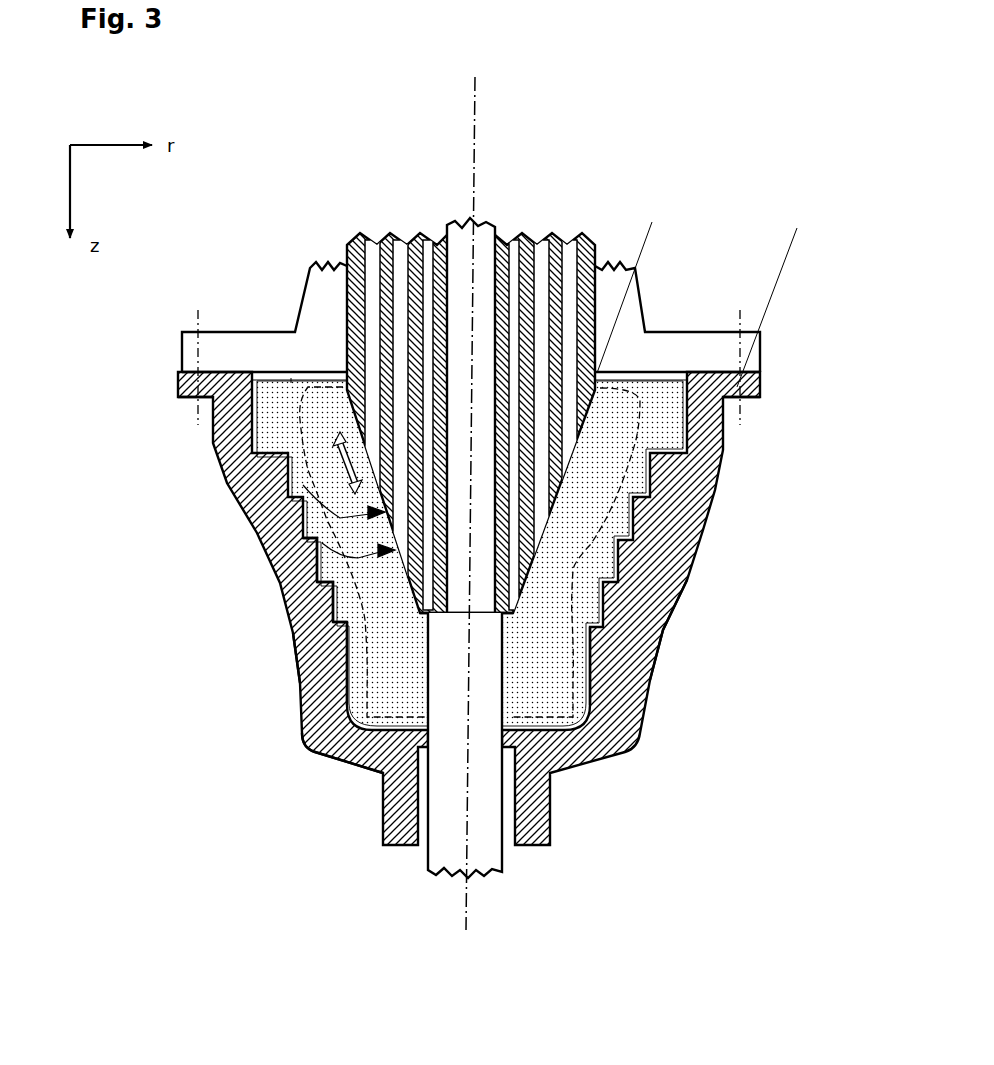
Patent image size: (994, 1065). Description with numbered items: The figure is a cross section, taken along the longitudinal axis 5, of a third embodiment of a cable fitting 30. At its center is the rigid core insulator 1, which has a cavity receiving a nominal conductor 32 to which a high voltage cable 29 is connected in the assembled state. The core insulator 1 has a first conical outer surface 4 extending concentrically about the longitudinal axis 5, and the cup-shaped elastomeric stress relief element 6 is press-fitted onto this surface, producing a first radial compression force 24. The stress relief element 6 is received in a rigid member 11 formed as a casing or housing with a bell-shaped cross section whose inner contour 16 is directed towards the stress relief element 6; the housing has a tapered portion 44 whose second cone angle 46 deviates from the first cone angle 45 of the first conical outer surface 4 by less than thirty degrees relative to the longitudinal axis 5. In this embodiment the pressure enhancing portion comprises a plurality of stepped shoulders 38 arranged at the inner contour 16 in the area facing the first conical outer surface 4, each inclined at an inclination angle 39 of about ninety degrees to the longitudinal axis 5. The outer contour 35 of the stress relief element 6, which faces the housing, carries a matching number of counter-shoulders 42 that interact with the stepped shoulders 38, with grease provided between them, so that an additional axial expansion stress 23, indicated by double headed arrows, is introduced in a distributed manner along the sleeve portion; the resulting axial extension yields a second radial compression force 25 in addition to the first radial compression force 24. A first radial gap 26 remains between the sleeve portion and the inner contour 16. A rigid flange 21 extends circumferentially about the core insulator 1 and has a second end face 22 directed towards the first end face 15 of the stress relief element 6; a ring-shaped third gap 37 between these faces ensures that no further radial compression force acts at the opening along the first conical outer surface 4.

The rigid core insulator 1 is at (357, 253).
The first conical outer surface 4 is at (567, 483).
The longitudinal axis 5 is at (460, 898).
The stress relief element 6 is at (570, 535).
The rigid member 11 is at (617, 698).
The first end face 15 is at (267, 381).
The inner contour 16 is at (330, 693).
The rigid flange 21 is at (237, 348).
The second end face 22 is at (272, 367).
The additional axial expansion stress 23 is at (283, 504).
The first radial compression force 24 is at (280, 567).
The second radial compression force 25 is at (335, 588).
The first radial gap 26 is at (253, 420).
The high voltage cable 29 is at (487, 797).
The cable fitting 30 is at (714, 122).
The nominal conductor 32 is at (460, 247).
The outer contour 35 is at (307, 735).
The third gap 37 is at (291, 378).
The stepped shoulders 38 is at (307, 663).
The inclination angle 39 is at (490, 627).
The counter-shoulders 42 is at (343, 614).
The tapered portion 44 is at (647, 650).
The first cone angle 45 is at (648, 228).
The second cone angle 46 is at (785, 240).